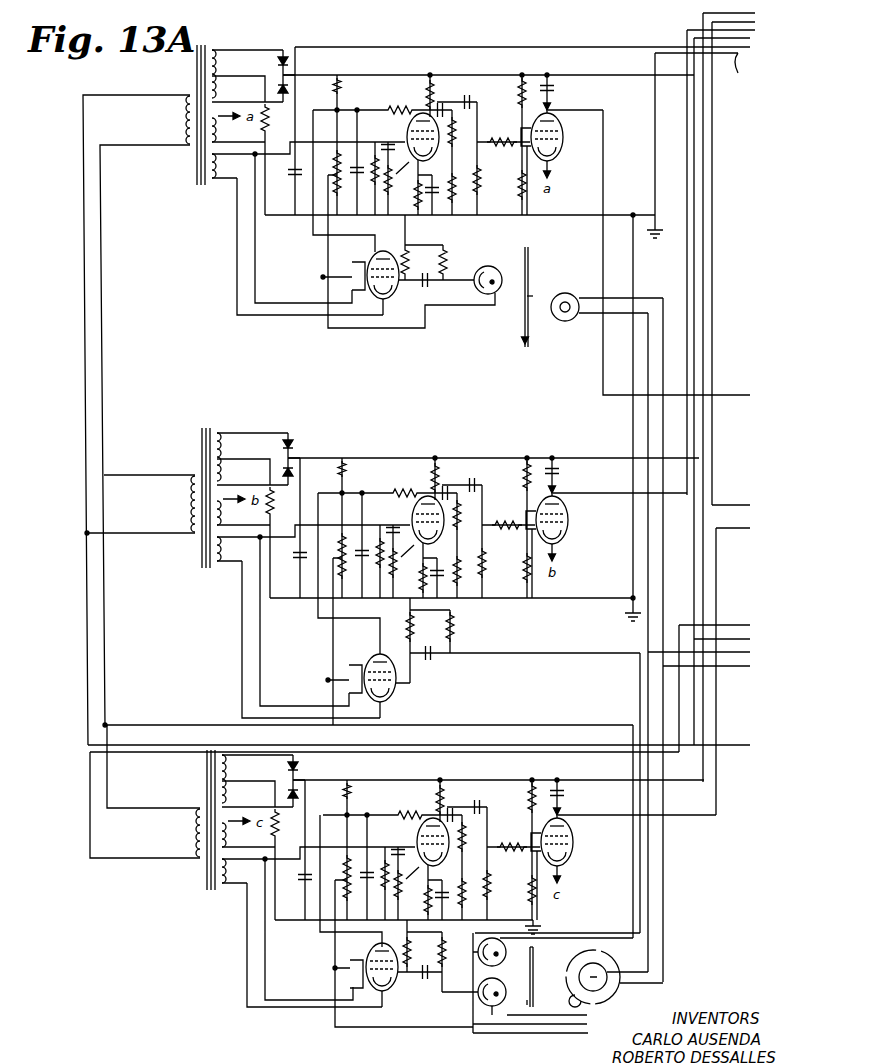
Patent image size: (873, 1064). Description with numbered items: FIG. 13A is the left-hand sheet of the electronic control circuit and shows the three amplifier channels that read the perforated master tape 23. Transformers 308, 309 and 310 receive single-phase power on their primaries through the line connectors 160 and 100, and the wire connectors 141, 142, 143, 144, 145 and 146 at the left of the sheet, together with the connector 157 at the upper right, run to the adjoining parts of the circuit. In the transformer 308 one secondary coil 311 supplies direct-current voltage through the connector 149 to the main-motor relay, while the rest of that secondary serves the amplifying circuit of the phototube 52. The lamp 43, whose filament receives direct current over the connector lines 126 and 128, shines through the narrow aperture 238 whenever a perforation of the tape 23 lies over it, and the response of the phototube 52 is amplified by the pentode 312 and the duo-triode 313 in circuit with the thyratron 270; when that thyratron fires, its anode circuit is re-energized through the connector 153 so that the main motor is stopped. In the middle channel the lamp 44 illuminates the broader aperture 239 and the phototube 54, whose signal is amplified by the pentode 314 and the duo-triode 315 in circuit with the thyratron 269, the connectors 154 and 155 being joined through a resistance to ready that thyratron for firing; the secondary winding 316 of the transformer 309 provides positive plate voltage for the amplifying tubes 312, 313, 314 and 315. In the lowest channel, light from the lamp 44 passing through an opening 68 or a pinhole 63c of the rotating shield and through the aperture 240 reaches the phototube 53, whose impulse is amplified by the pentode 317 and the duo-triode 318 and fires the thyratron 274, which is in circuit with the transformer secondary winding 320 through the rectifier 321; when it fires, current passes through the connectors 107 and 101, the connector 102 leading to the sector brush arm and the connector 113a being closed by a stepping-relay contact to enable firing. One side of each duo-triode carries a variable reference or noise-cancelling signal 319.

The supply lead 141 is at (121, 91).
The supply lead 142 is at (141, 145).
The transformer 308 is at (178, 181).
The secondary coil 311 is at (225, 66).
The duo-triode 313 is at (403, 126).
The variable reference or noise cancelling signal 319 is at (392, 196).
The thyratron 270 is at (560, 157).
The pentode 312 is at (365, 255).
The phototube 52 is at (499, 268).
The aperture 238 is at (527, 296).
The tape 23 is at (523, 323).
The lamp 43 is at (558, 321).
The connector 102 is at (703, 13).
The connector 101 is at (712, 24).
The connector 154 is at (752, 30).
The connector 155 is at (750, 38).
The connector 149 is at (750, 47).
The conductor 157 is at (709, 145).
The connector 153 is at (754, 389).
The transformer 309 is at (285, 513).
The secondary winding 316 is at (252, 458).
The supply lead 143 is at (141, 472).
The supply lead 144 is at (141, 530).
The duo-triode 315 is at (407, 547).
The thyratron 269 is at (565, 528).
The pentode 314 is at (376, 659).
The connector 107 is at (750, 528).
The line connector 100 is at (750, 625).
The line connector 160 is at (750, 639).
The connector line 128 is at (750, 652).
The connector line 126 is at (750, 666).
The transformer 310 is at (287, 835).
The transformer secondary winding 320 is at (257, 781).
The rectifier 321 is at (308, 781).
The supply lead 145 is at (147, 805).
The supply lead 146 is at (147, 856).
The duo-triode 318 is at (417, 857).
The thyratron 274 is at (570, 850).
The pentode 317 is at (391, 978).
The phototube 54 is at (512, 908).
The aperture 239 is at (530, 947).
The phototube 53 is at (487, 1003).
The lamp 44 is at (602, 967).
The opening 68 is at (564, 978).
The pinhole 63c is at (576, 999).
The connector 113a is at (570, 1050).
The aperture 240 is at (528, 991).